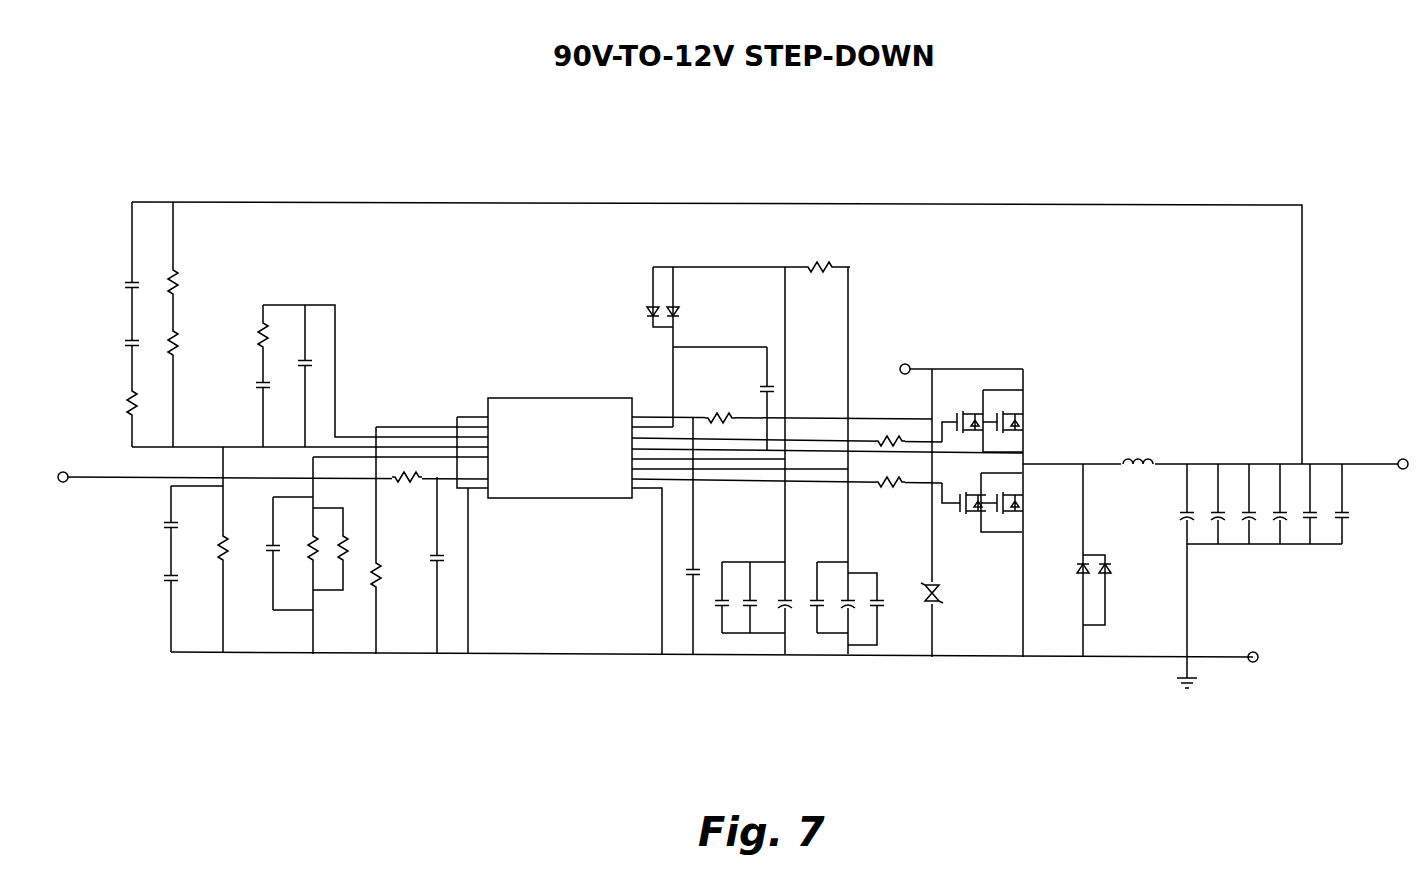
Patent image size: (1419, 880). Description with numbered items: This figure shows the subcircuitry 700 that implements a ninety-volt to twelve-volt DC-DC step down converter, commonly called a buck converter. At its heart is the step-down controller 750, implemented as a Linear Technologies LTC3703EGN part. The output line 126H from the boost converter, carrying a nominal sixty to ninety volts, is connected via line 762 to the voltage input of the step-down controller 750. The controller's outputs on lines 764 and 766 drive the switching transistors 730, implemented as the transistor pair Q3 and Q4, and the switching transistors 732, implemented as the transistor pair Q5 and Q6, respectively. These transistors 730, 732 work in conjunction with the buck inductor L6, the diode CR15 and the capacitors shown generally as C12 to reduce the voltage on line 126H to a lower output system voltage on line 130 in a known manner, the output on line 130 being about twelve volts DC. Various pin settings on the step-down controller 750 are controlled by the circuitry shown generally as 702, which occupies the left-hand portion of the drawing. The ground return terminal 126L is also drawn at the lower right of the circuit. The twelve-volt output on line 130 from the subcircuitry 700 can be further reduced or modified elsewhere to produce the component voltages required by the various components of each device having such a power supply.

The subcircuitry 700 is at (1326, 101).
The pin setting circuitry 702 is at (475, 690).
The step-down controller 750 is at (504, 393).
The line 762 is at (880, 420).
The line 764 is at (816, 446).
The line 766 is at (731, 482).
The switching transistors 730 is at (1032, 405).
The switching transistors 732 is at (1028, 517).
The output line 126H is at (905, 362).
The ground return terminal 126L is at (1255, 665).
The line 130 is at (1403, 457).
The transistor Q3 is at (967, 410).
The transistor Q4 is at (1012, 404).
The transistor Q5 is at (964, 518).
The transistor Q6 is at (1010, 532).
The buck inductor L6 is at (1138, 446).
The capacitors C12 is at (1340, 553).
The diode CR15 is at (1077, 592).